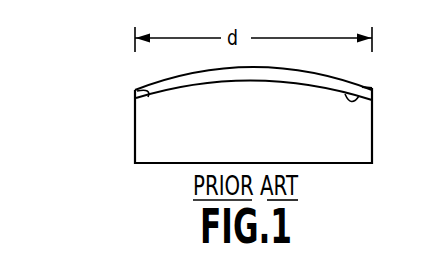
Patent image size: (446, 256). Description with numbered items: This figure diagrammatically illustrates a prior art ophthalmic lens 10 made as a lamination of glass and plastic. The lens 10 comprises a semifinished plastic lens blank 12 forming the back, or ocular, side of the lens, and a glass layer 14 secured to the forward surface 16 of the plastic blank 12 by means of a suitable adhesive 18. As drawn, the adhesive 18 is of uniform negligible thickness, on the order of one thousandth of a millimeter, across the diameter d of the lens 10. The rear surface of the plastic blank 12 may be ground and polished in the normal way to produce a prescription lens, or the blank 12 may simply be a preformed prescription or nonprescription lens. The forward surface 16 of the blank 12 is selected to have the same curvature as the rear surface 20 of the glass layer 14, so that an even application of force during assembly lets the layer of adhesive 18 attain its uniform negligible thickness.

The prior art ophthalmic lens 10 is at (113, 162).
The semifinished plastic lens blank 12 is at (357, 154).
The glass layer 14 is at (331, 57).
The forward surface 16 is at (363, 93).
The adhesive 18 is at (372, 102).
The rear surface 20 is at (135, 93).